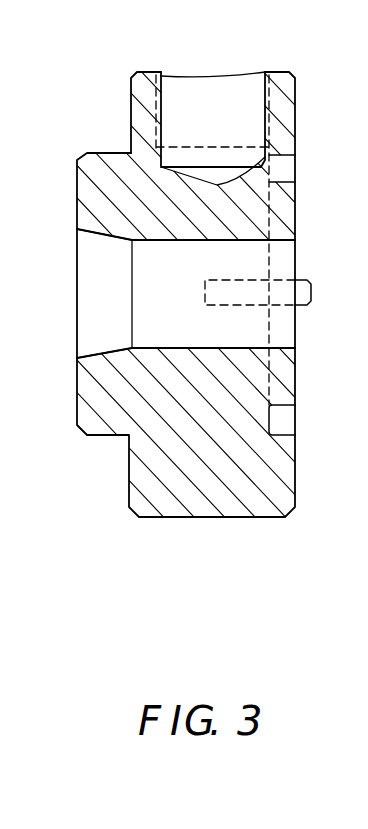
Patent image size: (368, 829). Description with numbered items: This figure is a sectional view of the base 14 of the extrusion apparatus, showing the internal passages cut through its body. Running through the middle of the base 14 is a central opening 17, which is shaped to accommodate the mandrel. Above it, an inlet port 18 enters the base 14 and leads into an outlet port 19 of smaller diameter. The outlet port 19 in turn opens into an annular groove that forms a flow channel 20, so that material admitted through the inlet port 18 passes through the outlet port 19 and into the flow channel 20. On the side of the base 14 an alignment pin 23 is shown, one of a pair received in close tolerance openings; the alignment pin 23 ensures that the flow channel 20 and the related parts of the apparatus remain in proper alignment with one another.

The base 14 is at (178, 516).
The central opening 17 is at (88, 352).
The inlet port 18 is at (162, 90).
The outlet port 19 is at (264, 170).
The flow channel 20 is at (295, 428).
The alignment pin 23 is at (298, 280).